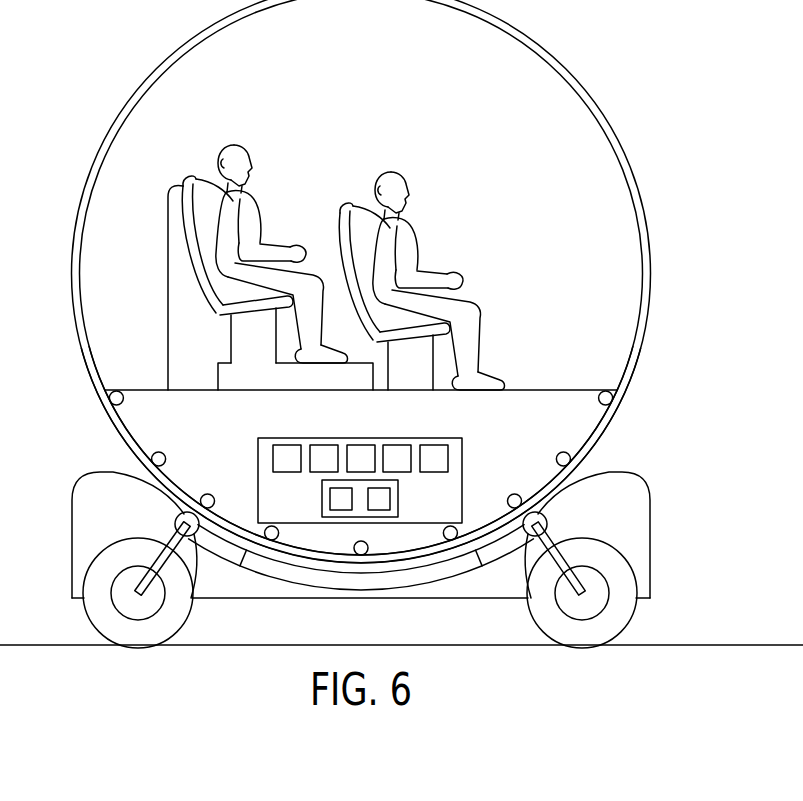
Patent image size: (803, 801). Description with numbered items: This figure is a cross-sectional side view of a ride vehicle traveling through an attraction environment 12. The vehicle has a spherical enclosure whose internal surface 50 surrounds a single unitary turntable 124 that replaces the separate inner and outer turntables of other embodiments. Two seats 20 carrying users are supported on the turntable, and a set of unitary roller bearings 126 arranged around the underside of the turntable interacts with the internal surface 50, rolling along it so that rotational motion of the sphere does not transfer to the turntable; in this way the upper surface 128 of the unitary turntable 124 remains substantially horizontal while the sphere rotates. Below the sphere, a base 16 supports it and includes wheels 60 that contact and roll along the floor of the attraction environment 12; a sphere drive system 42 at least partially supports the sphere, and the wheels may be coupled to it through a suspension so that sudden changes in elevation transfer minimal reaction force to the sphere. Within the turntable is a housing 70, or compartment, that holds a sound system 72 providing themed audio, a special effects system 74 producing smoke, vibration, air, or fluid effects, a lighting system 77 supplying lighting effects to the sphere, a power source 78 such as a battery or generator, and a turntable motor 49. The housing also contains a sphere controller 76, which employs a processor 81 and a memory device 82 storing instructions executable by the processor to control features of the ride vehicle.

The attraction environment 12 is at (738, 538).
The base 16 is at (650, 575).
The seats 20 is at (479, 308).
The sphere drive system 42 is at (562, 523).
The turntable motor 49 is at (258, 458).
The internal surface 50 is at (556, 80).
The wheels 60 is at (88, 617).
The housing 70 is at (258, 492).
The sound system 72 is at (323, 445).
The special effects system 74 is at (357, 445).
The sphere controller 76 is at (398, 499).
The lighting system 77 is at (395, 445).
The power source 78 is at (462, 454).
The processor 81 is at (330, 497).
The memory device 82 is at (389, 492).
The unitary turntable 124 is at (570, 417).
The unitary roller bearings 126 is at (578, 462).
The upper surface 128 is at (532, 390).